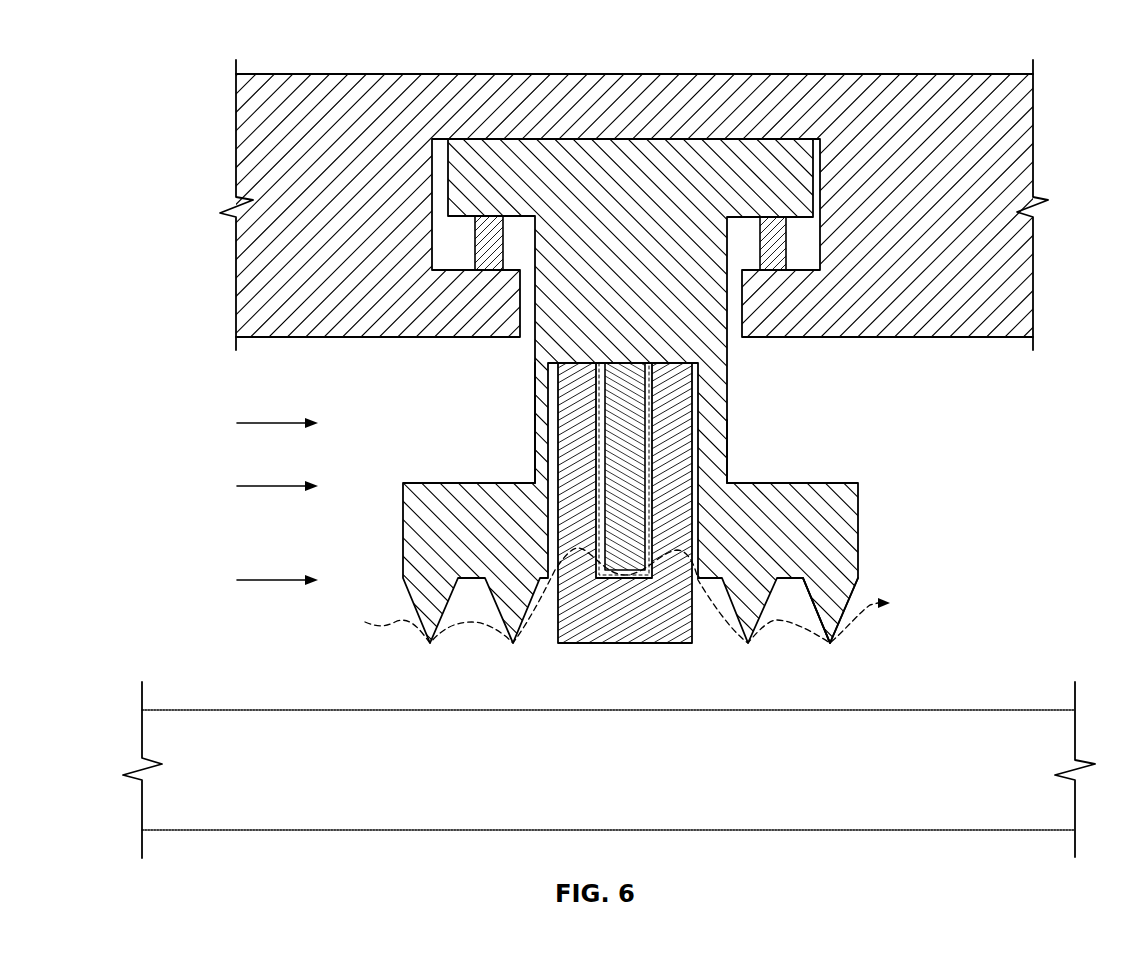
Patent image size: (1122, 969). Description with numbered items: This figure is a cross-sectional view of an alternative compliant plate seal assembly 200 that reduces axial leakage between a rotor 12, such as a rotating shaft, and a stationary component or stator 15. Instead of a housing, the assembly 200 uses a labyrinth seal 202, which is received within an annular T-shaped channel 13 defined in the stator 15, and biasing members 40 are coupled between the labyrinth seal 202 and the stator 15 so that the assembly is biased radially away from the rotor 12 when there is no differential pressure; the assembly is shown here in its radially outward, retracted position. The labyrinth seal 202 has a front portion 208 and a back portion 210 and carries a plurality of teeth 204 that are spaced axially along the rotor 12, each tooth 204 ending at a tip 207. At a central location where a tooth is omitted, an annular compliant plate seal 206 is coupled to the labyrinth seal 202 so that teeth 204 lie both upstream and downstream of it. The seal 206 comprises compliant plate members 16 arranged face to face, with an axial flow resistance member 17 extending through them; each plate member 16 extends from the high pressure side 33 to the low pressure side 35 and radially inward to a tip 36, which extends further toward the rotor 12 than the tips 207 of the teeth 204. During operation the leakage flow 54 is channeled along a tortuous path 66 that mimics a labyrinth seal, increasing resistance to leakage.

The compliant plate seal assembly 200 is at (130, 74).
The stator 15 is at (358, 325).
The annular T-shaped channel 13 is at (457, 262).
The biasing member 40 is at (770, 265).
The labyrinth seal 202 is at (718, 340).
The front portion 208 is at (538, 392).
The annular compliant plate seal 206 is at (546, 437).
The back portion 210 is at (712, 457).
The tooth 204 is at (827, 605).
The tip of tooth 207 is at (830, 645).
The tip 36 is at (620, 644).
The compliant plate member 16 is at (683, 428).
The axial flow resistance member 17 is at (638, 417).
The tortuous path 66 is at (387, 617).
The leakage flow 54 is at (273, 423).
The high pressure side 33 is at (283, 544).
The low pressure side 35 is at (931, 544).
The rotor 12 is at (640, 784).